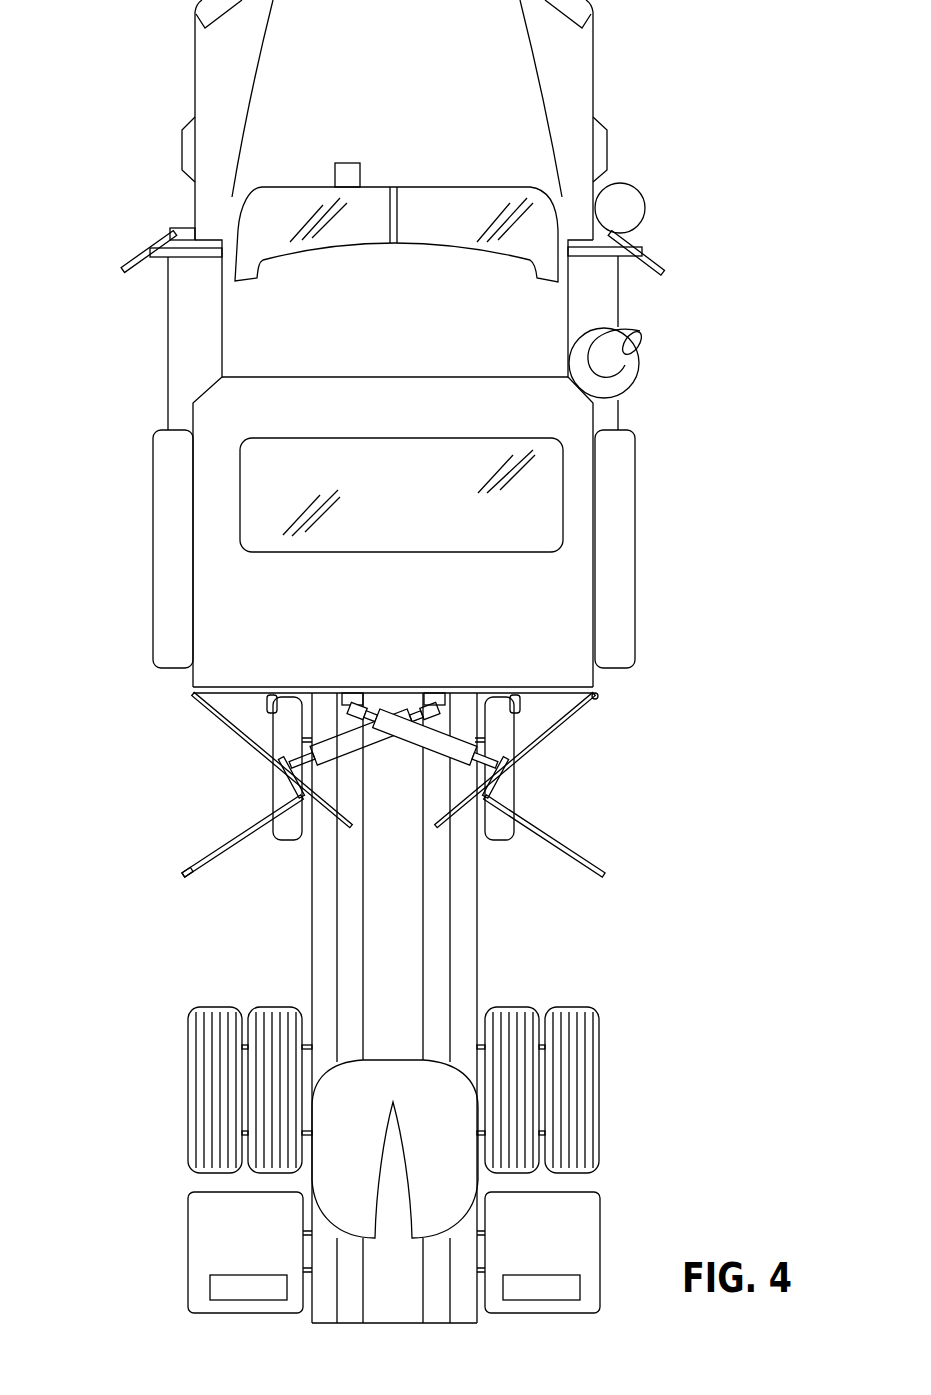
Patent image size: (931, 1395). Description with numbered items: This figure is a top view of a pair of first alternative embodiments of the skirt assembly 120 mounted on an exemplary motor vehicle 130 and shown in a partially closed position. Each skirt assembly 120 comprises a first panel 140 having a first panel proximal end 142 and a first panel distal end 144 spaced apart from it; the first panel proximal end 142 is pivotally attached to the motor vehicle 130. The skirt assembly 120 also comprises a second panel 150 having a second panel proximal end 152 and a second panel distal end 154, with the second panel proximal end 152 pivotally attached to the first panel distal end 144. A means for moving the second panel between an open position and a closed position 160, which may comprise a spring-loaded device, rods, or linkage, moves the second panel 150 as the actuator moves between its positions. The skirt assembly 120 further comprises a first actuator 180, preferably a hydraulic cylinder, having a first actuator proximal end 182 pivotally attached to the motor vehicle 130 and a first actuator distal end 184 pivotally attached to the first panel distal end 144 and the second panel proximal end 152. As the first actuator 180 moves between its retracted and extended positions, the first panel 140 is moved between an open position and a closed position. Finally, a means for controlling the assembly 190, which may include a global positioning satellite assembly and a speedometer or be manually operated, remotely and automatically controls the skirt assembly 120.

The skirt assembly 120 is at (214, 736).
The motor vehicle 130 is at (600, 533).
The first panel 140 is at (547, 750).
The first panel proximal end 142 is at (597, 698).
The first panel distal end 144 is at (490, 785).
The second panel 150 is at (231, 842).
The second panel proximal end 152 is at (289, 795).
The second panel distal end 154 is at (183, 881).
The means for moving the second panel between an open position and a closed position 160 is at (492, 799).
The first actuator 180 is at (405, 730).
The first actuator proximal end 182 is at (343, 706).
The first actuator distal end 184 is at (492, 758).
The means for controlling the assembly 190 is at (336, 178).